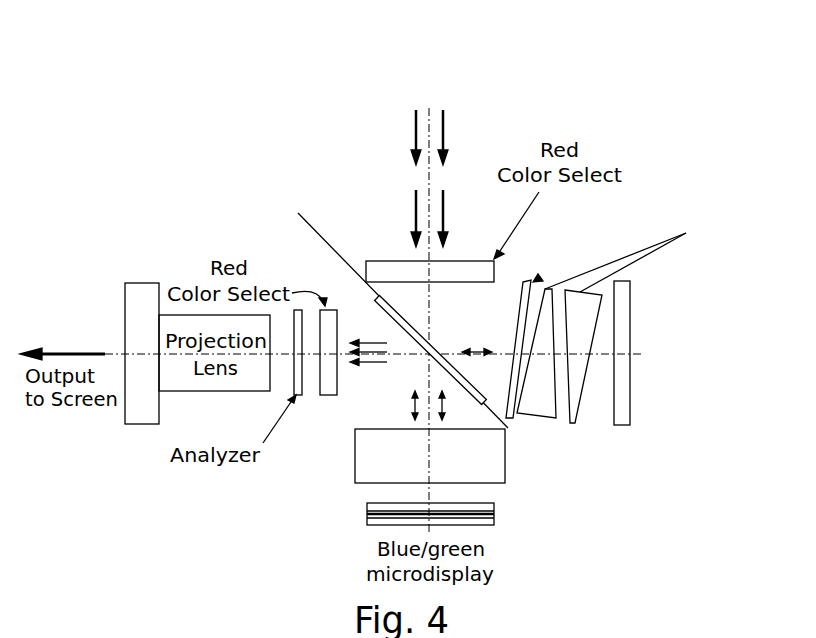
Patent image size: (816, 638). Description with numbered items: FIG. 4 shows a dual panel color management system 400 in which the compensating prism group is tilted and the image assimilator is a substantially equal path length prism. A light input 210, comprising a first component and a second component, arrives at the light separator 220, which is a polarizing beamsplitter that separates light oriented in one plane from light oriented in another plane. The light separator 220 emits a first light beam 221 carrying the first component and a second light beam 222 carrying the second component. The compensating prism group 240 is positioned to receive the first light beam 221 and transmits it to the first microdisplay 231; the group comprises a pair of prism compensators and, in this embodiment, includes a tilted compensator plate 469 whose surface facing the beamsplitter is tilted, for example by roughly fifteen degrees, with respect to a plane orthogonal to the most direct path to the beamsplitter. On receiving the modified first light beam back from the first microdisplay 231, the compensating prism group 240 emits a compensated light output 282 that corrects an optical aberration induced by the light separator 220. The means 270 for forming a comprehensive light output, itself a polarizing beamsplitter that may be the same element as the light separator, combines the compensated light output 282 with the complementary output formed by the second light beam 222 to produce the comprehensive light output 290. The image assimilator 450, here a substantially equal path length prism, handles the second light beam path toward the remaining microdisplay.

The projection display system 400 is at (98, 143).
The light input 210 is at (389, 53).
The light separator 220 is at (182, 182).
The first light beam 221 is at (488, 346).
The second light beam 222 is at (411, 364).
The first microdisplay 231 is at (631, 320).
The compensating prism group 240 is at (754, 188).
The means for forming a comprehensive light output 270 is at (508, 428).
The compensated light output 282 is at (464, 352).
The comprehensive light output 290 is at (368, 341).
The image assimilator 450 is at (510, 482).
The tilted compensator plate 469 is at (537, 279).